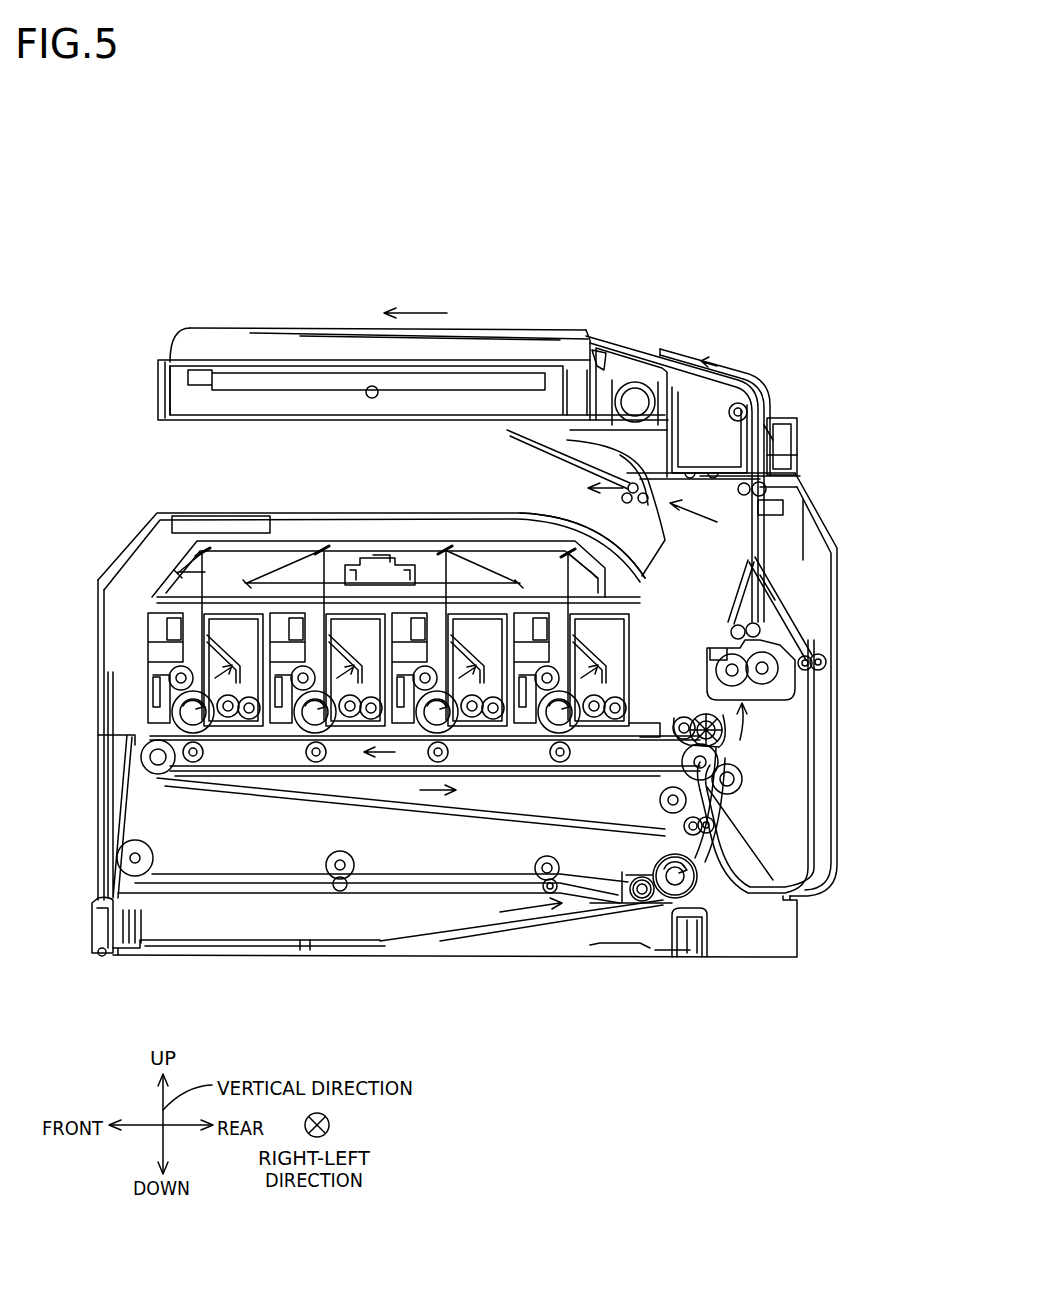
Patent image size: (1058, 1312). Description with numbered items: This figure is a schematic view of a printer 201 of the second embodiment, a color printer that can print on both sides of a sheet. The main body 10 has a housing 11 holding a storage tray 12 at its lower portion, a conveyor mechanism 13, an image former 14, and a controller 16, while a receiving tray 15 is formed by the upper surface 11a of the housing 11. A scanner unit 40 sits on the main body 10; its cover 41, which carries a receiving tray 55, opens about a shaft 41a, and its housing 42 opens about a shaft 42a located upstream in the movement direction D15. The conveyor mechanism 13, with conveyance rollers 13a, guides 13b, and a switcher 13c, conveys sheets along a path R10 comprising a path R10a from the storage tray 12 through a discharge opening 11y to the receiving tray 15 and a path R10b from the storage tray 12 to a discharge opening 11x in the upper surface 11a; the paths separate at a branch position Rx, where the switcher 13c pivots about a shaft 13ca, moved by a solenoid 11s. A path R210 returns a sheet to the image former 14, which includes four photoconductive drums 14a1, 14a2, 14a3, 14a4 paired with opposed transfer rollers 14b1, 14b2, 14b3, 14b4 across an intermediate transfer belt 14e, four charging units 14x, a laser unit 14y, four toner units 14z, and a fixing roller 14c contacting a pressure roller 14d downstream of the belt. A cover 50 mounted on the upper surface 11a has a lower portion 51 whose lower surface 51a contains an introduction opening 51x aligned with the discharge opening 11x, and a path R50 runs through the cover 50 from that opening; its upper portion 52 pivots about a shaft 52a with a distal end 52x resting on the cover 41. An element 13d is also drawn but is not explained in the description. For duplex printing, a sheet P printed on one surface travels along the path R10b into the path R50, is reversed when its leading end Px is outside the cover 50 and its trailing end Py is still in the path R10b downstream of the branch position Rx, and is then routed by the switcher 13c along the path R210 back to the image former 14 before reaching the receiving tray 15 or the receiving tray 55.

The printer 201 is at (176, 142).
The scanner unit 40 is at (185, 318).
The cover 41 is at (258, 348).
The housing 42 is at (158, 394).
The shaft 42a is at (636, 398).
The shaft 41a is at (585, 352).
The distal end 52x is at (605, 342).
The upper portion 52 is at (692, 372).
The shaft 52a is at (730, 413).
The lower surface 51a is at (686, 472).
The path R50 is at (736, 368).
The cover 50 is at (778, 388).
The lower portion 51 is at (790, 428).
The conveying guide 13d is at (772, 432).
The upper surface 11a is at (772, 455).
The shaft 13ca is at (790, 478).
The introduction opening 51x is at (792, 488).
The discharge opening 11x is at (797, 500).
The conveyance rollers 13a is at (565, 440).
The solenoid 11s is at (805, 523).
The path R10b is at (835, 552).
The branch position Rx is at (785, 560).
The main body 10 is at (885, 626).
The path R10 is at (840, 655).
The guides 13b is at (735, 612).
The housing 11 is at (843, 780).
The path R210 is at (820, 807).
The storage tray 12 is at (228, 940).
The photoconductive drum 14a4 is at (158, 775).
The photoconductive drum 14a3 is at (297, 738).
The transfer roller 14b3 is at (317, 763).
The photoconductive drum 14a2 is at (432, 770).
The intermediate transfer belt 14e is at (380, 800).
The conveyor mechanism 13 is at (548, 853).
The transfer roller 14b2 is at (450, 757).
The transfer roller 14b1 is at (565, 766).
The photoconductive drum 14a1 is at (592, 745).
The transfer roller 14b4 is at (205, 752).
The charging units 14x is at (174, 655).
The fixing roller 14c is at (720, 674).
The pressure roller 14d is at (752, 682).
The image former 14 is at (693, 644).
The trailing end Py is at (737, 563).
The switcher 13c is at (728, 560).
The toner units 14z is at (233, 633).
The path R10a is at (640, 521).
The movement direction D15 is at (588, 489).
The discharge opening 11y is at (625, 480).
The receiving tray 15 is at (215, 512).
The controller 16 is at (162, 522).
The laser unit 14y is at (378, 548).
The receiving tray 55 is at (270, 330).
The leading end Px is at (283, 330).
The sheet P is at (495, 332).